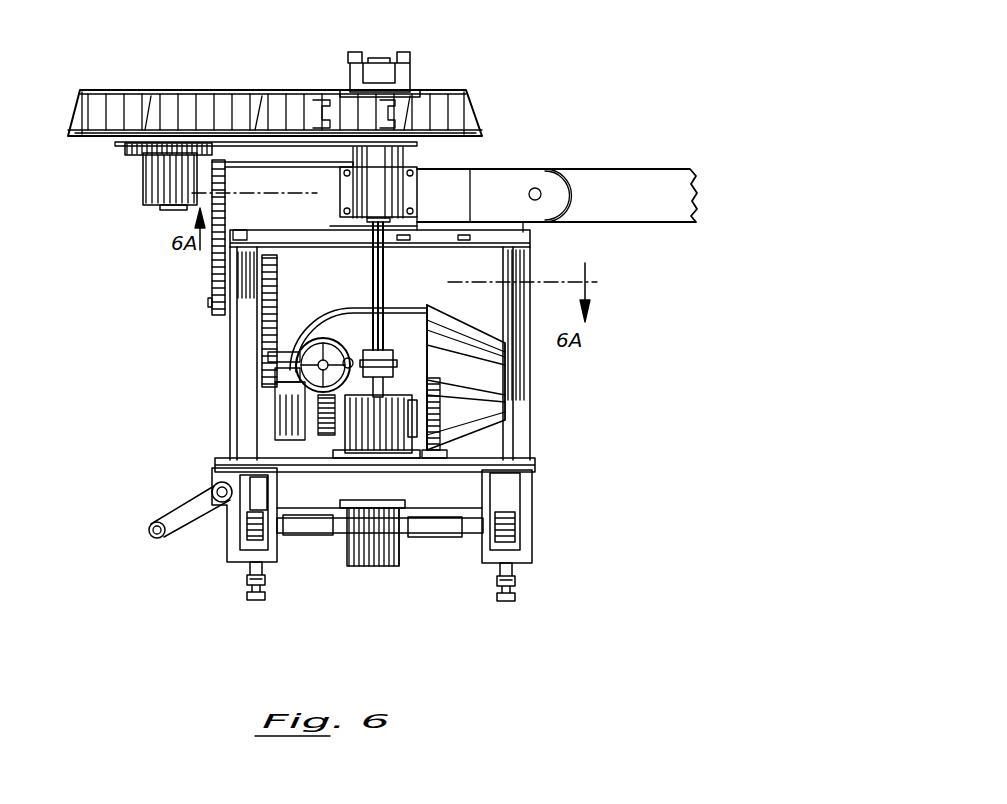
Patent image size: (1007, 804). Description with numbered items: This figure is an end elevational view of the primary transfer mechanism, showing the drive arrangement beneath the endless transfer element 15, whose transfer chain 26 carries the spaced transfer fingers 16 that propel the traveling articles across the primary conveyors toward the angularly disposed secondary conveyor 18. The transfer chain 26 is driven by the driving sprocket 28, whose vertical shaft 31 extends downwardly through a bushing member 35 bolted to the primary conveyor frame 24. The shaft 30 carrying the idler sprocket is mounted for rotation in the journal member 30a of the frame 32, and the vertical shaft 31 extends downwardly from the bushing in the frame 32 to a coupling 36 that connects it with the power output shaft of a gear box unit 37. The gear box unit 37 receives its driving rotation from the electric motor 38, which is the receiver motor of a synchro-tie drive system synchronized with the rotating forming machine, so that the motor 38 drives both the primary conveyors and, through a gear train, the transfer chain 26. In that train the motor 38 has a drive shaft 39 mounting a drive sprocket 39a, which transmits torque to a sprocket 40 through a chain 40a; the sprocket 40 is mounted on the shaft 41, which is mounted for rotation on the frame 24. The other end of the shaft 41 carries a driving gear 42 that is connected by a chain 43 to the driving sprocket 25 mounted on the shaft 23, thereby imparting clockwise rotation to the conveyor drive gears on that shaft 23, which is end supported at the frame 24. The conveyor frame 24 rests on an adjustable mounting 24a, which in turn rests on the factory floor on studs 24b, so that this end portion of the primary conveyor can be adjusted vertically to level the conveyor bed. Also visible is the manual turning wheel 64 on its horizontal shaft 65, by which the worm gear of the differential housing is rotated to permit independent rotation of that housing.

The endless transfer element 15 is at (476, 96).
The transfer fingers 16 is at (78, 116).
The secondary conveyor 18 is at (655, 150).
The shaft 23 is at (222, 195).
The frame 24 is at (527, 236).
The adjustable mounting 24a is at (576, 493).
The studs 24b is at (265, 596).
The driving sprocket 25 is at (222, 195).
The transfer chain 26 is at (243, 106).
The driving sprocket 28 is at (436, 100).
The shaft 30 is at (165, 205).
The journal member 30a is at (150, 173).
The vertical shaft 31 is at (395, 32).
The frame 32 is at (262, 146).
The bushing member 35 is at (388, 170).
The coupling 36 is at (394, 368).
The gear box unit 37 is at (398, 440).
The electric motor 38 is at (480, 384).
The drive shaft 39 is at (305, 352).
The drive sprocket 39a is at (265, 366).
The sprocket 40 is at (272, 266).
The chain 40a is at (272, 330).
The shaft 41 is at (225, 290).
The driving gear 42 is at (215, 312).
The chain 43 is at (215, 253).
The turning wheel 64 is at (312, 392).
The horizontal shaft 65 is at (300, 376).